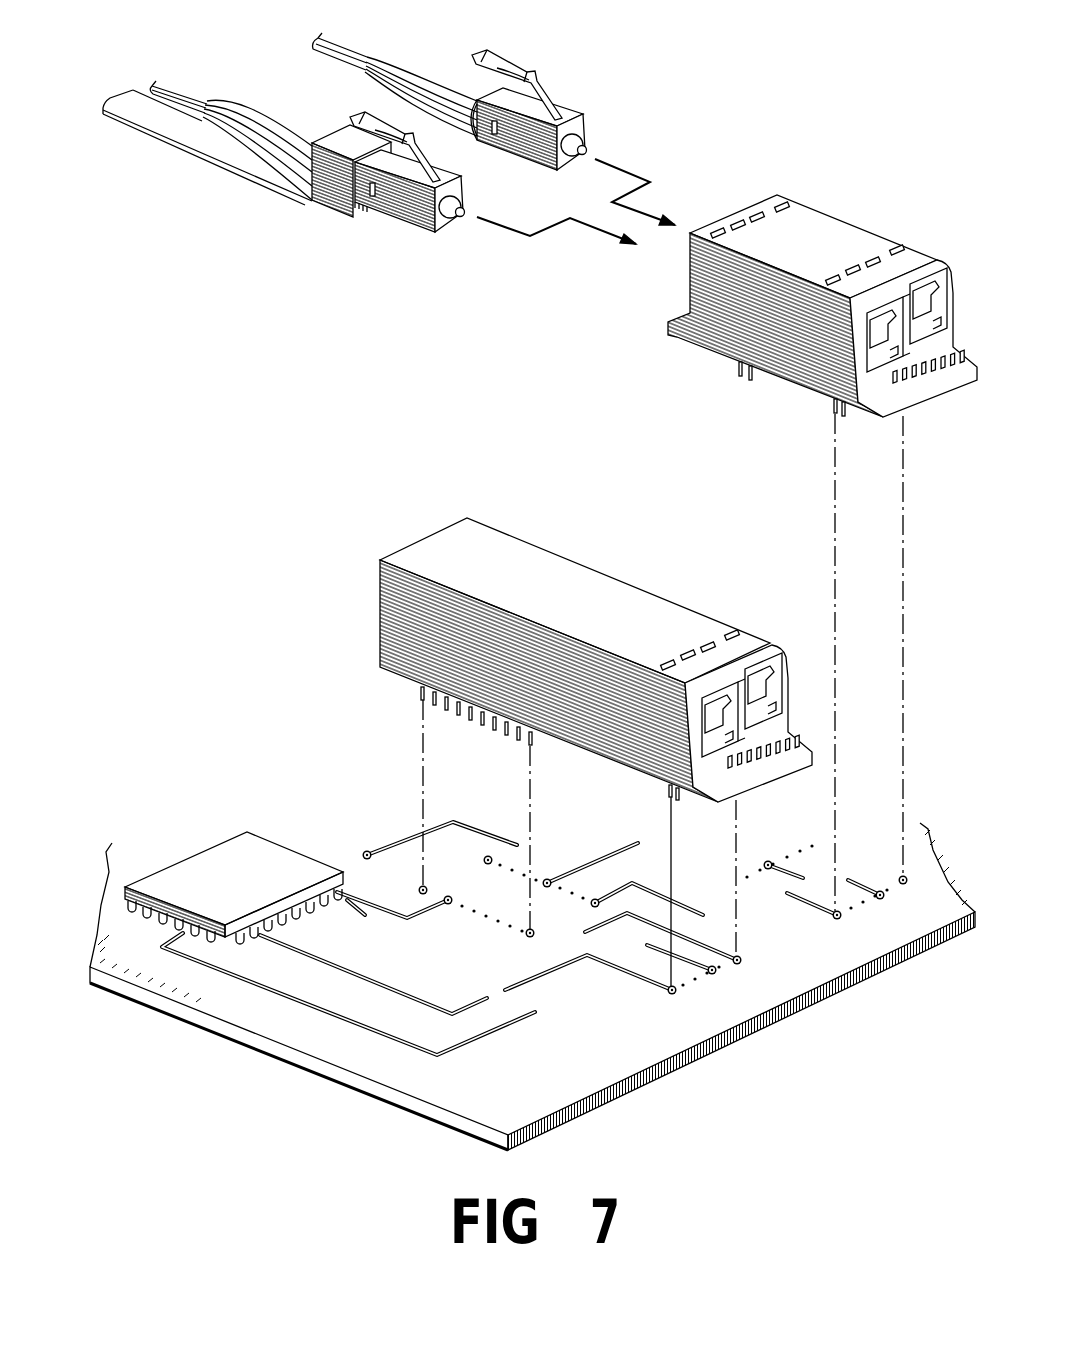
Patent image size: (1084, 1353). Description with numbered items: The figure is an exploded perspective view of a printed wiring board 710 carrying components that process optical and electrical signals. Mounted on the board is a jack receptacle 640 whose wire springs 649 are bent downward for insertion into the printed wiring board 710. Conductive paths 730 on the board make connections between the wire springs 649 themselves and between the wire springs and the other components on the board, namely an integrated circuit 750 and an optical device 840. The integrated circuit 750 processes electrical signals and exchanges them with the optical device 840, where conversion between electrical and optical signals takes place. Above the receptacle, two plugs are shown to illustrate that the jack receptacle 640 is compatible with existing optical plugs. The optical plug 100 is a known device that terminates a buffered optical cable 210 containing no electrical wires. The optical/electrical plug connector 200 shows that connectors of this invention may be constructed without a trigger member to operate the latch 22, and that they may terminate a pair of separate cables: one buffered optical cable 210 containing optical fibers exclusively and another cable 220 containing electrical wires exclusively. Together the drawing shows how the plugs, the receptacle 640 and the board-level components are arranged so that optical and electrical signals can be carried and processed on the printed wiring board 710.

The optical plug 100 is at (602, 122).
The optical/electrical plug connector 200 is at (403, 223).
The buffered optical cable 210 is at (185, 100).
The cable 220 is at (142, 113).
The latch 22 is at (357, 110).
The jack receptacle 640 is at (740, 212).
The wire springs 649 is at (832, 402).
The optical device 840 is at (432, 538).
The printed wiring board 710 is at (530, 1094).
The conductive paths 730 is at (487, 1000).
The integrated circuit 750 is at (203, 855).